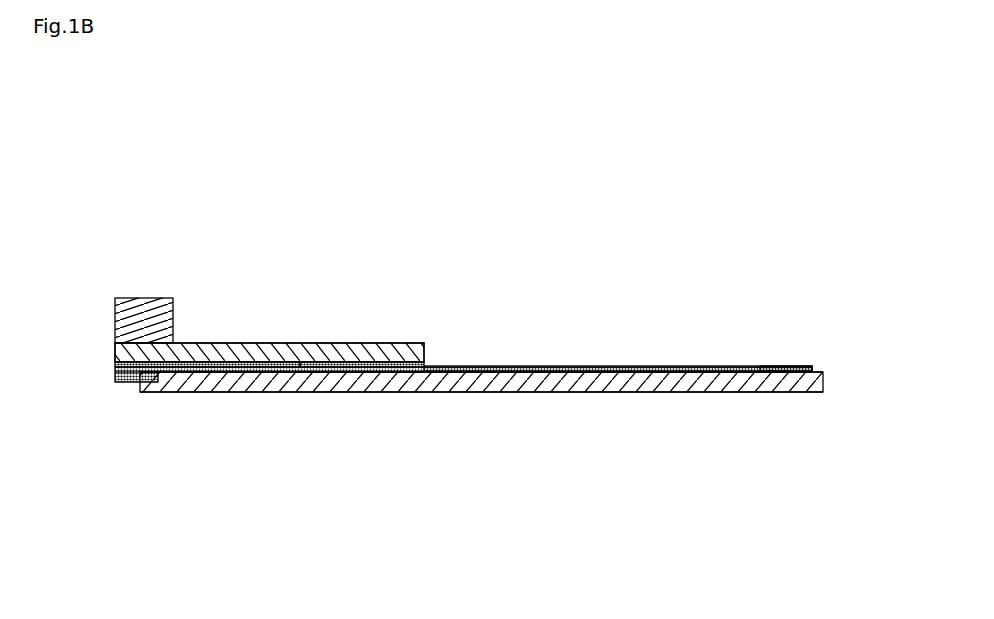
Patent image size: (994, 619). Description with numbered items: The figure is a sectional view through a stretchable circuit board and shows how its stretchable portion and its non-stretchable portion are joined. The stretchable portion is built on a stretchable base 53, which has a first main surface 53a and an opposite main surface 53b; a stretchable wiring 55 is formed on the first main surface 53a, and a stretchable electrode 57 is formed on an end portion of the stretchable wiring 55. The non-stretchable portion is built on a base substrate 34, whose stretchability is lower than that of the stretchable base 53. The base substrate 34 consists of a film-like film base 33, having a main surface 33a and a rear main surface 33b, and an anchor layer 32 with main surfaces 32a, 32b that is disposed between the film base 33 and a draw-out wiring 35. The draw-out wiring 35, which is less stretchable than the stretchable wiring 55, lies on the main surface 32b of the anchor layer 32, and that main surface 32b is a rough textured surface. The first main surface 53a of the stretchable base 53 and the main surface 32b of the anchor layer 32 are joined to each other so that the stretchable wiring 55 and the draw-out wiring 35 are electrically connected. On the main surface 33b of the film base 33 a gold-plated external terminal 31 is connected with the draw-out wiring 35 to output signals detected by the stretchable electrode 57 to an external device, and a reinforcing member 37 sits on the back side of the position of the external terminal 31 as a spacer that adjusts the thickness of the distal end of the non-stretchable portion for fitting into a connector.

The external terminal 31 is at (135, 382).
The anchor layer 32 is at (462, 265).
The main surface 32a is at (407, 343).
The main surface 32b is at (375, 364).
The film base 33 is at (203, 265).
The main surface 33a is at (292, 343).
The main surface 33b is at (245, 364).
The base substrate 34 is at (238, 222).
The draw-out wiring 35 is at (273, 372).
The reinforcing member 37 is at (145, 298).
The stretchable base 53 is at (543, 478).
The main surface 53a is at (522, 376).
The main surface 53b is at (465, 392).
The stretchable wiring 55 is at (580, 367).
The stretchable electrode 57 is at (782, 367).